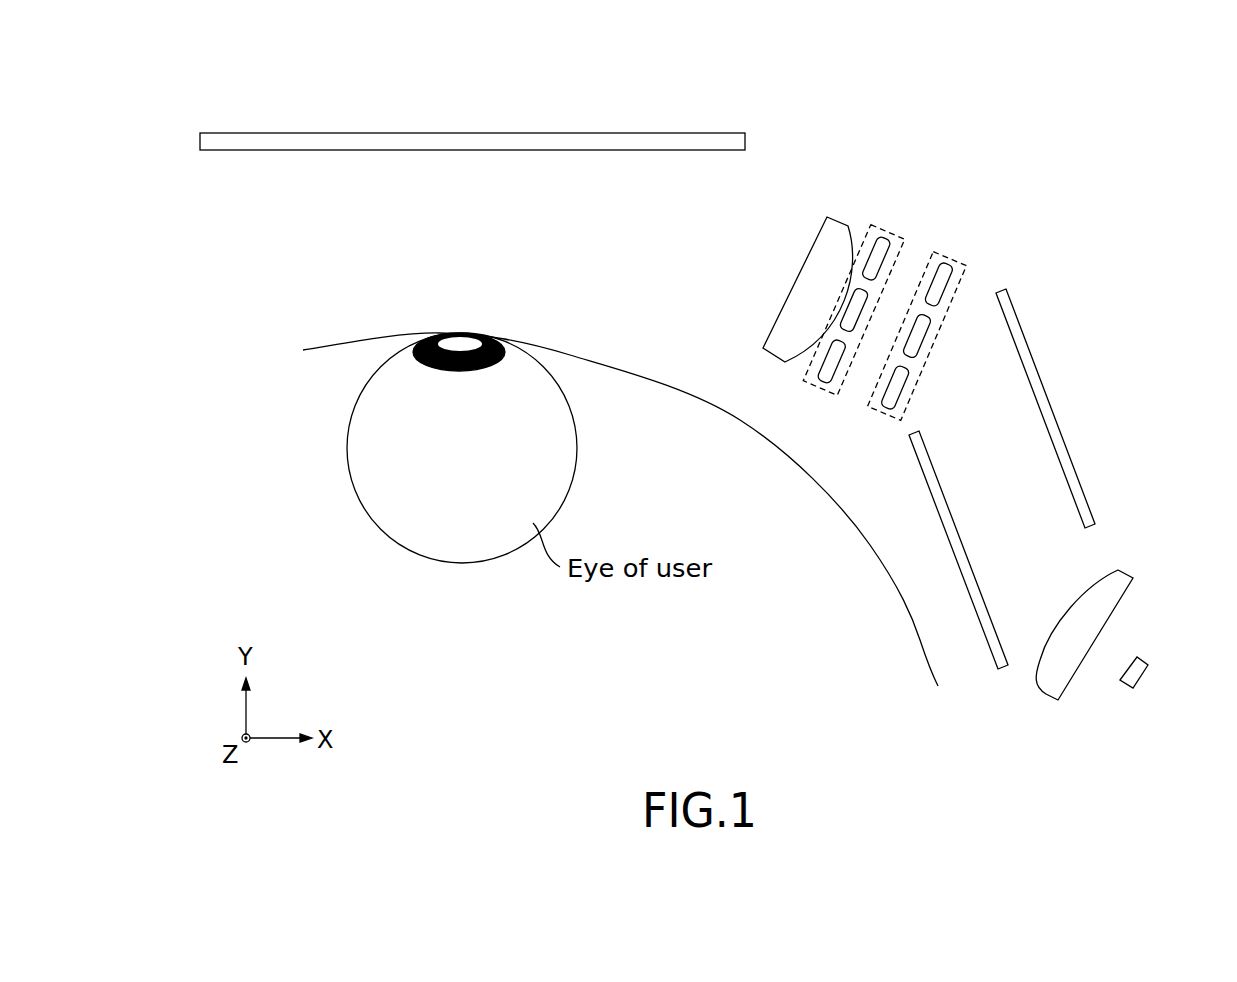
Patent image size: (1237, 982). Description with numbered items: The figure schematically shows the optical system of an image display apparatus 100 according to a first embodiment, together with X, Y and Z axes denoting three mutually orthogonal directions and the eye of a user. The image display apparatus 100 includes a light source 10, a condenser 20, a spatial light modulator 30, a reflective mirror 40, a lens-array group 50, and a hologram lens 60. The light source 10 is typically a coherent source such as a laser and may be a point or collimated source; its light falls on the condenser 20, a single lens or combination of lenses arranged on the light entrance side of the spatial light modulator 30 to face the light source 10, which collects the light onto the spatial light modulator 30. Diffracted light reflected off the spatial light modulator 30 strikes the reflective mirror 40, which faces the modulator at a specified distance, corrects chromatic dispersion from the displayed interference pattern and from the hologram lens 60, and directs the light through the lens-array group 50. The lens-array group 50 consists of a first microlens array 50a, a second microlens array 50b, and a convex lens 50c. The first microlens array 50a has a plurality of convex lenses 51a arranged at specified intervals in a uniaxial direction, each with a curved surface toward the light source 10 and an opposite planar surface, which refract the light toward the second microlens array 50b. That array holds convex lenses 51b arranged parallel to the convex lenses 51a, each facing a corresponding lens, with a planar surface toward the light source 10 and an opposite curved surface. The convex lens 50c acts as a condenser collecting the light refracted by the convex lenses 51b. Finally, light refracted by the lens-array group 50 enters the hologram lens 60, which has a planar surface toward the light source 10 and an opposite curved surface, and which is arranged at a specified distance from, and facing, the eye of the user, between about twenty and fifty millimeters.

The image display apparatus 100 is at (808, 92).
The light source 10 is at (1143, 678).
The condenser 20 is at (1117, 577).
The spatial light modulator (SLM) 30 is at (957, 545).
The reflective mirror 40 is at (1045, 398).
The lens-array group 50 is at (885, 297).
The first microlens array 50a is at (935, 308).
The second microlens array 50b is at (875, 318).
The convex lens 50c is at (837, 228).
The convex lens 51a is at (917, 336).
The convex lens 51b is at (832, 361).
The hologram lens 60 is at (460, 143).